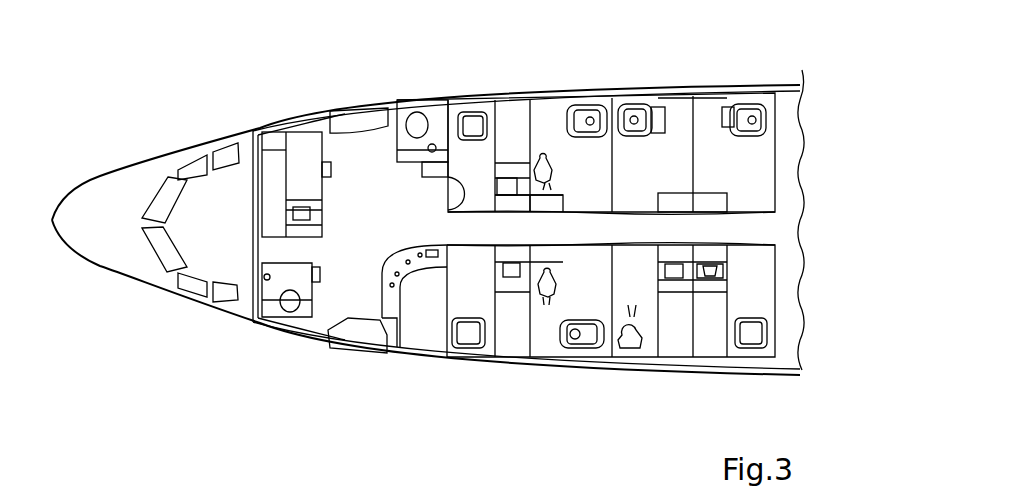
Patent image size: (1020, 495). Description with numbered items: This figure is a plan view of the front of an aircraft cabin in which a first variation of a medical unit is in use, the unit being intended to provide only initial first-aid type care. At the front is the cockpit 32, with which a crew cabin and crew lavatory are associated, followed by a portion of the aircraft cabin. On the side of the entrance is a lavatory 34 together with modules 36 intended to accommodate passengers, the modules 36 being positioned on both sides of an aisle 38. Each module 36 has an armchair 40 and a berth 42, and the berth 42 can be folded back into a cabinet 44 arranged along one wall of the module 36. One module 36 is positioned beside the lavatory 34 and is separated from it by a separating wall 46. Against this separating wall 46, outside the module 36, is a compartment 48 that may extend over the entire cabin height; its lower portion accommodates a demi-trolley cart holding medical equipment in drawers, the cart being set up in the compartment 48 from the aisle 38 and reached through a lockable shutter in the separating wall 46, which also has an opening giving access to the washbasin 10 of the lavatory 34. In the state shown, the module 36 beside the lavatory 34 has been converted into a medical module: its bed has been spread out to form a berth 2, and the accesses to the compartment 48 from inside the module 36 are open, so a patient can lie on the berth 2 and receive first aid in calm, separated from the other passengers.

The berth 2 is at (515, 108).
The washbasin 10 is at (433, 150).
The cockpit 32 is at (207, 192).
The lavatory 34 is at (432, 113).
The module 36 is at (680, 113).
The aisle 38 is at (743, 230).
The armchair 40 is at (472, 123).
The berth 42 is at (512, 345).
The cabinet 44 is at (515, 207).
The separating wall 46 is at (455, 210).
The compartment 48 is at (435, 182).